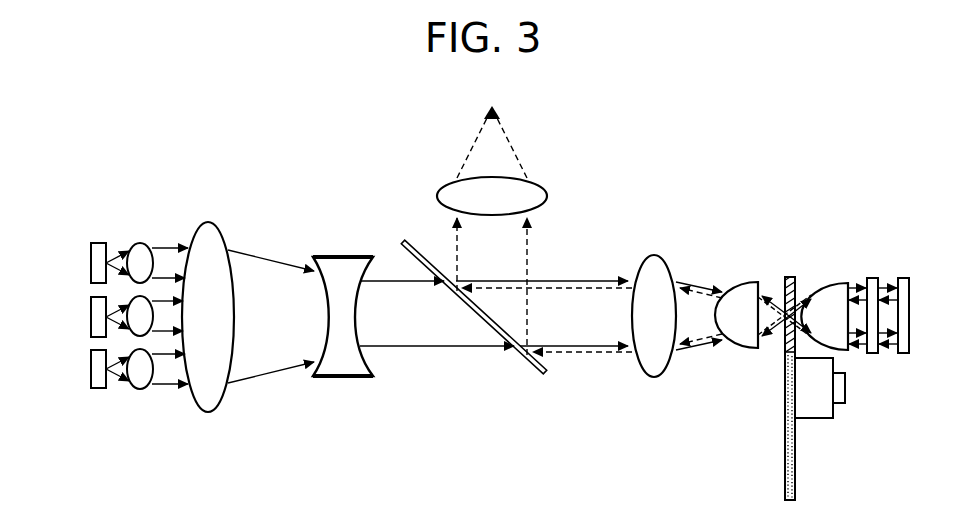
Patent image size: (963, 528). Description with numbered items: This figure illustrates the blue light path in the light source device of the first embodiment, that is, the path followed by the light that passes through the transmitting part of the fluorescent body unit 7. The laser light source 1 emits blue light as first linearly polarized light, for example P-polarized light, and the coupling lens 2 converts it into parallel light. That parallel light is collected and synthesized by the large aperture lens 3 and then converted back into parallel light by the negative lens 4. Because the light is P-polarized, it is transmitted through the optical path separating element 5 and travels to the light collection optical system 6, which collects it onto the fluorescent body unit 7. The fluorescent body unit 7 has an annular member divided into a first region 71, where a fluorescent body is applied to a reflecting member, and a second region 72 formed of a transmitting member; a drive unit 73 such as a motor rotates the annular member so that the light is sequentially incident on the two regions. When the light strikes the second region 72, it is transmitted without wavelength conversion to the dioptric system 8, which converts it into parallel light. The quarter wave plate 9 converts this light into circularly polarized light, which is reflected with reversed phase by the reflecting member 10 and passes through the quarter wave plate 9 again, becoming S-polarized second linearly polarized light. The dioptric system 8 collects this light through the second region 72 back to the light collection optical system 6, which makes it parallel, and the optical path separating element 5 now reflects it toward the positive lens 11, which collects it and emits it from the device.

The laser light source 1 is at (78, 232).
The coupling lens 2 is at (143, 390).
The large aperture lens 3 is at (208, 222).
The negative lens 4 is at (345, 378).
The optical path separating element 5 is at (493, 330).
The light collection optical system 6 is at (740, 350).
The fluorescent body unit 7 is at (796, 437).
The first region 71 is at (796, 473).
The second region 72 is at (790, 277).
The drive unit 73 is at (835, 410).
The dioptric system 8 is at (830, 283).
The quarter wave plate 9 is at (872, 278).
The reflecting member 10 is at (912, 306).
The positive lens 11 is at (547, 192).